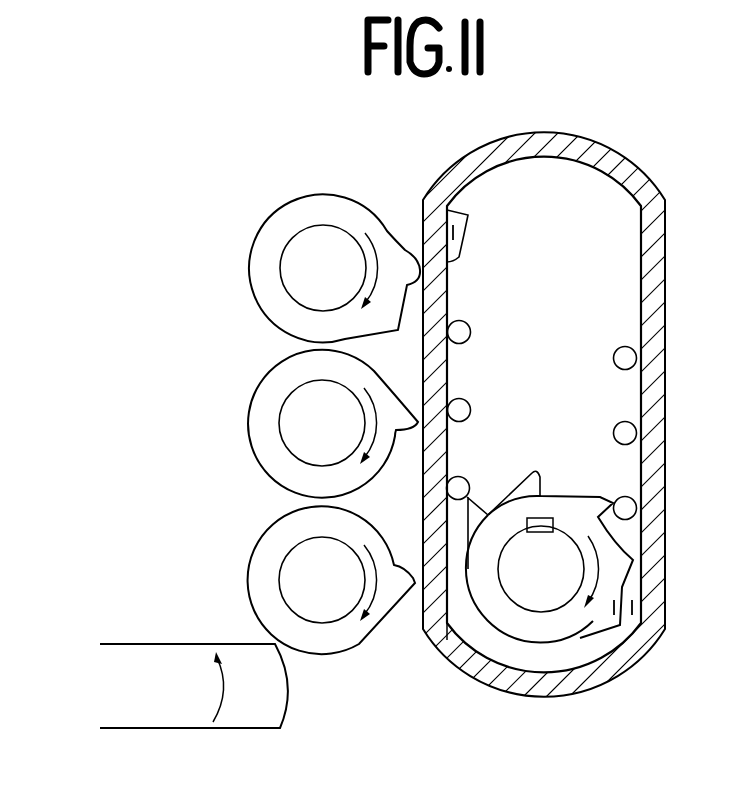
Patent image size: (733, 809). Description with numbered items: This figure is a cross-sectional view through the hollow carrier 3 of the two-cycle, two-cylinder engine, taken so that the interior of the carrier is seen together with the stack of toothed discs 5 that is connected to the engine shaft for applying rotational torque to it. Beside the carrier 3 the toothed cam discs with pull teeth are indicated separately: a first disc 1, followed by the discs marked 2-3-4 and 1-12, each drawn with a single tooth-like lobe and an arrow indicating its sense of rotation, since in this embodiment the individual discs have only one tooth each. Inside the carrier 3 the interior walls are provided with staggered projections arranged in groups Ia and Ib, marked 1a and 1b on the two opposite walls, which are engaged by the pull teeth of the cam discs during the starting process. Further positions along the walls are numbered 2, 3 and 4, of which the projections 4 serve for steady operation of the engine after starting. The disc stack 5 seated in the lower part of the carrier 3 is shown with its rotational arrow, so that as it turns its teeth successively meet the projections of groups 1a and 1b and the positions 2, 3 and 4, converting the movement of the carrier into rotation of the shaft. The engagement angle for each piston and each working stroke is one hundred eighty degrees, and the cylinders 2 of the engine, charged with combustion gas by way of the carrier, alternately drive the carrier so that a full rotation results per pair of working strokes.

The toothed cam disc 1 is at (323, 220).
The rotary member, positions 2-3-4 is at (333, 424).
The rotary member, positions 1-12 is at (331, 580).
The stack of toothed discs 5 is at (549, 556).
The group Ia of staggered projections 1a is at (625, 441).
The group Ib of staggered projections 1b is at (460, 450).
The cylinder 2 is at (542, 420).
The carrier 3 is at (542, 422).
The staggered projections for steady operation 4 is at (542, 423).